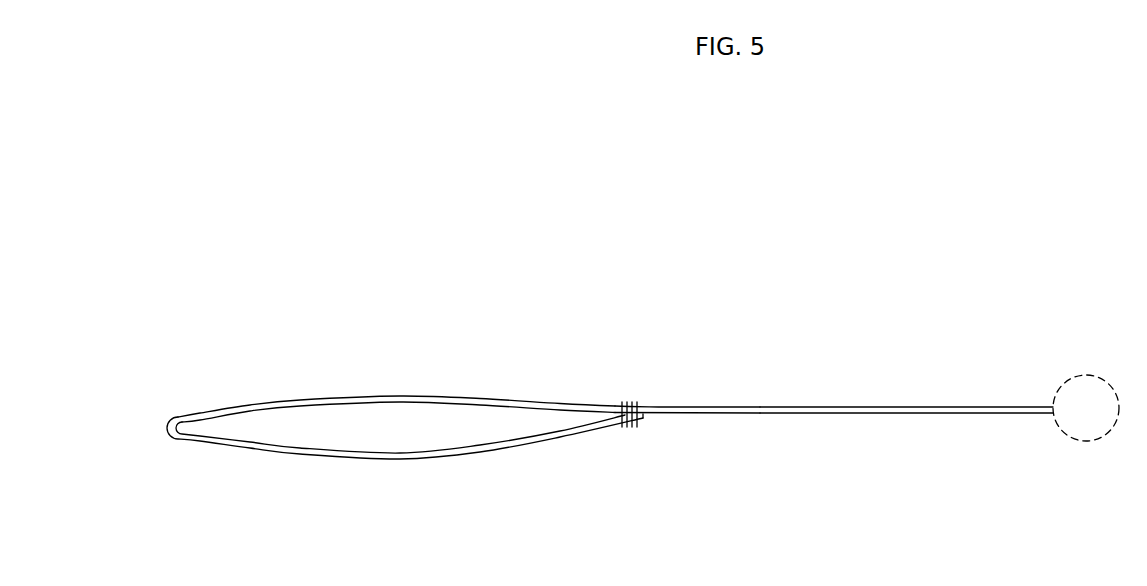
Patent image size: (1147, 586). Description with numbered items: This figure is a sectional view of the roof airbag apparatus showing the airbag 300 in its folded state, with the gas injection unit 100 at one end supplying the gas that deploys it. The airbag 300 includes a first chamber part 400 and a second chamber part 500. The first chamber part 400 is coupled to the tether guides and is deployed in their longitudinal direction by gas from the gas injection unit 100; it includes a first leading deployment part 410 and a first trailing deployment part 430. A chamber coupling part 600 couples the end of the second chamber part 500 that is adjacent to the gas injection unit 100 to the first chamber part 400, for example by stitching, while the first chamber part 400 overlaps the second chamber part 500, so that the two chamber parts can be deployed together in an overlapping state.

The gas injection unit 100 is at (1093, 378).
The airbag 300 is at (857, 358).
The first chamber part 400 is at (469, 352).
The first leading deployment part 410 is at (687, 368).
The first trailing deployment part 430 is at (485, 402).
The second chamber part 500 is at (407, 458).
The chamber coupling part 600 is at (638, 428).